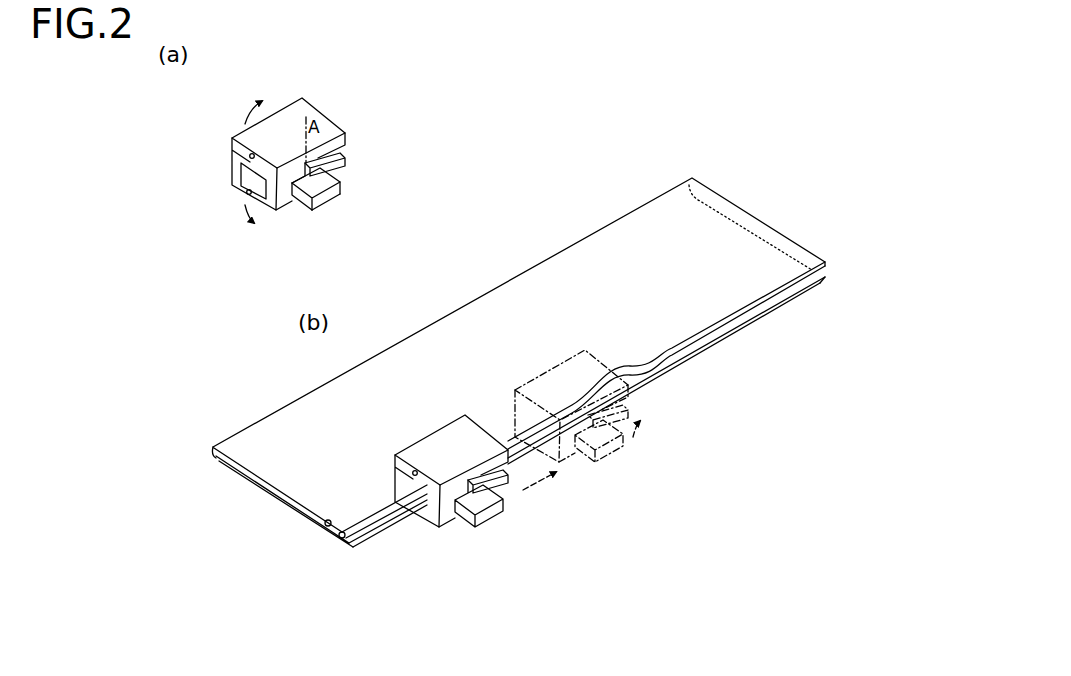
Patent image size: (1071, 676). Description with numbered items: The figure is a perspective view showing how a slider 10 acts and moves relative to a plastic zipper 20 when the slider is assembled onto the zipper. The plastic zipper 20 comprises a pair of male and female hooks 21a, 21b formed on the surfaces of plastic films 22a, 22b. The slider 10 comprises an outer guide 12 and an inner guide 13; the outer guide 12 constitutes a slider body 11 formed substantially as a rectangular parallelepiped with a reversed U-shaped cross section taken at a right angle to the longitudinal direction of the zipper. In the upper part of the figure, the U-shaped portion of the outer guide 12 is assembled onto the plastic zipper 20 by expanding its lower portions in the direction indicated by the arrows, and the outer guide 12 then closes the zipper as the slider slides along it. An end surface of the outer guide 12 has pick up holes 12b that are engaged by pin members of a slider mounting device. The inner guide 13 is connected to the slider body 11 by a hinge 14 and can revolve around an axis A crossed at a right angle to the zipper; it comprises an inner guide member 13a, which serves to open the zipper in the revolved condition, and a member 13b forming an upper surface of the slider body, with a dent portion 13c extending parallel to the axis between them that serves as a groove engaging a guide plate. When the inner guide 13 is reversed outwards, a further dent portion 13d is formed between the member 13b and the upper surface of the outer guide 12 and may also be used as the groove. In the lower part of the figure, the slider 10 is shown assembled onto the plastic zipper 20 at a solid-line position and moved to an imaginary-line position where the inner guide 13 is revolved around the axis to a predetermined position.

The slider 10 is at (396, 312).
The slider body 11 is at (303, 110).
The outer guide 12 is at (238, 150).
The pick up holes 12b is at (251, 153).
The inner guide 13 is at (428, 347).
The inner guide member 13a is at (338, 186).
The member 13b is at (290, 208).
The dent portion 13c is at (304, 204).
The dent portion 13d is at (296, 170).
The hinge 14 is at (340, 153).
The plastic zipper 20 is at (518, 403).
The male hook 21a is at (326, 520).
The female hook 21b is at (339, 536).
The plastic film 22a is at (368, 503).
The plastic film 22b is at (397, 525).